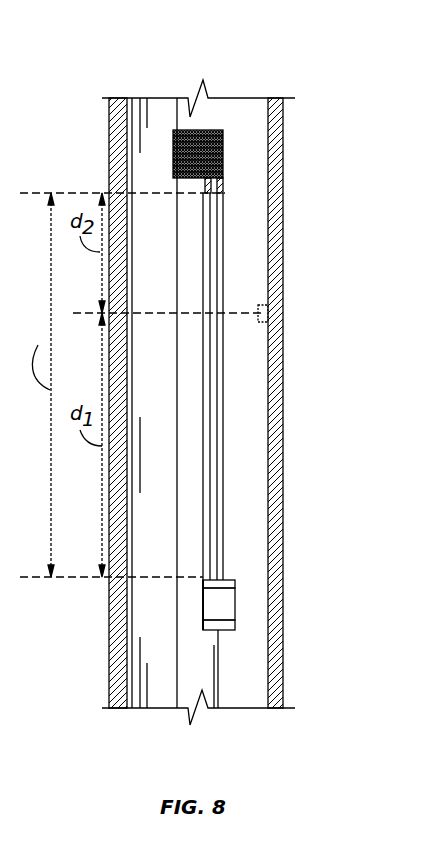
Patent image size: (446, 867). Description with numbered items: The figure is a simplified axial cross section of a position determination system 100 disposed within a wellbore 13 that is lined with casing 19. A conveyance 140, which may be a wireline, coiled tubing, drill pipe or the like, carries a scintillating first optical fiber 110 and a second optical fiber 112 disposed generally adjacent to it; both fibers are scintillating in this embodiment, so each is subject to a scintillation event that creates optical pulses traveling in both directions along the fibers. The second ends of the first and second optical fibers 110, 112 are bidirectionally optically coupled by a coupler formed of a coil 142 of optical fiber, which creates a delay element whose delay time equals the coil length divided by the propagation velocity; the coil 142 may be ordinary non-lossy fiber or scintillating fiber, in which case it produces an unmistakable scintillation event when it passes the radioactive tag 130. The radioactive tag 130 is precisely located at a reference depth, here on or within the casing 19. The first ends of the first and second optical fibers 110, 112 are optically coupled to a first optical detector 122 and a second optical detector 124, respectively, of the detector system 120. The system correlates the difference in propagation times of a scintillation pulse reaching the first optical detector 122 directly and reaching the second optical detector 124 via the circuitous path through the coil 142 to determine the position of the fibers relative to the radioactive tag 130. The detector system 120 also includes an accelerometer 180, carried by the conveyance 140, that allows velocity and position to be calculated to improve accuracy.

The position determination system 100 is at (332, 3).
The wellbore 13 is at (162, 110).
The casing 19 is at (275, 432).
The coil 142 is at (223, 148).
The conveyance 140 is at (232, 165).
The radioactive tag 130 is at (265, 313).
The second optical fiber 112 is at (210, 505).
The first optical fiber 110 is at (224, 552).
The first optical detector 122 is at (237, 584).
The detector system 120 is at (237, 598).
The accelerometer 180 is at (237, 622).
The second optical detector 124 is at (203, 583).